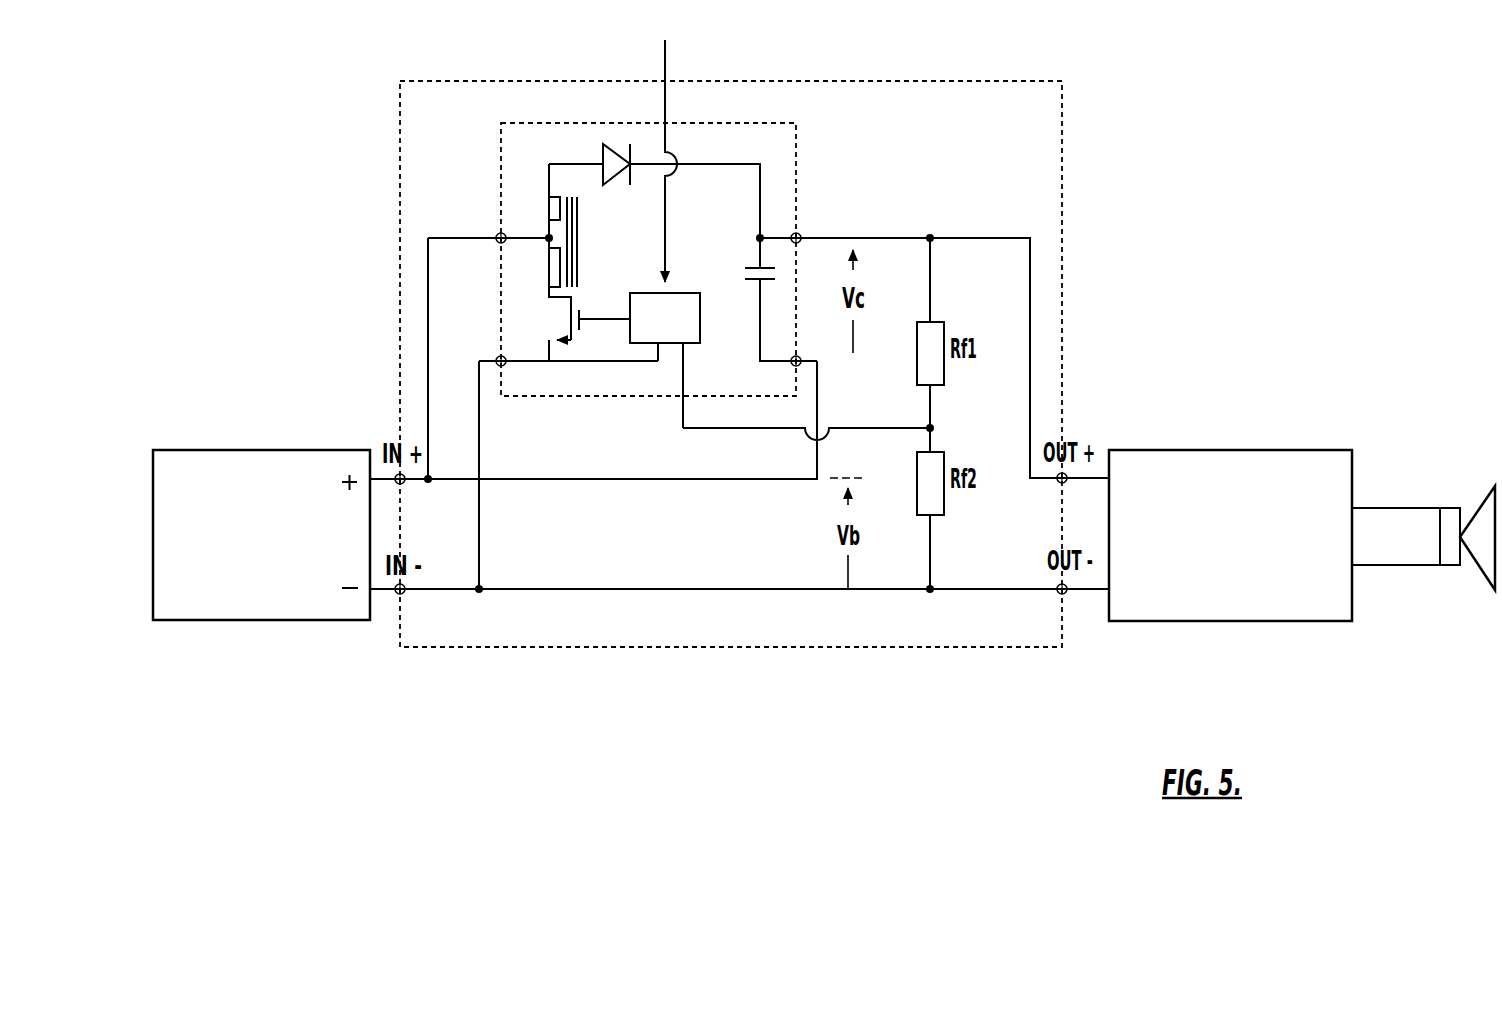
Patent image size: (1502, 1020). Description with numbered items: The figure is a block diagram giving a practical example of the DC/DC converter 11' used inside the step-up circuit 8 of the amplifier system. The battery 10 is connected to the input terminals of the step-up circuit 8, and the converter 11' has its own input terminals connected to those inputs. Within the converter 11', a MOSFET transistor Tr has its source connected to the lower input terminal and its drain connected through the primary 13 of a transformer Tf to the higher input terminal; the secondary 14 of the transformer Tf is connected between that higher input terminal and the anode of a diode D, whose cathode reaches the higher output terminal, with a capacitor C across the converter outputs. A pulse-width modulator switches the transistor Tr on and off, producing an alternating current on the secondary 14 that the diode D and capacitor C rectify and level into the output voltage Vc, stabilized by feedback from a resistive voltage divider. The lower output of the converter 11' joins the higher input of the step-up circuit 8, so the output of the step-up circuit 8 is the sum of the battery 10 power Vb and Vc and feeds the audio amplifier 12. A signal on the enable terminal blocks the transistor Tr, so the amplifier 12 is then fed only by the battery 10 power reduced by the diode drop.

The step-up circuit 8 is at (920, 78).
The DC/DC converter 11' is at (649, 234).
The battery 10 is at (275, 468).
The audio amplifier 12 is at (1205, 467).
The primary of transformer Tf 13 is at (555, 271).
The secondary of transformer Tf 14 is at (557, 207).